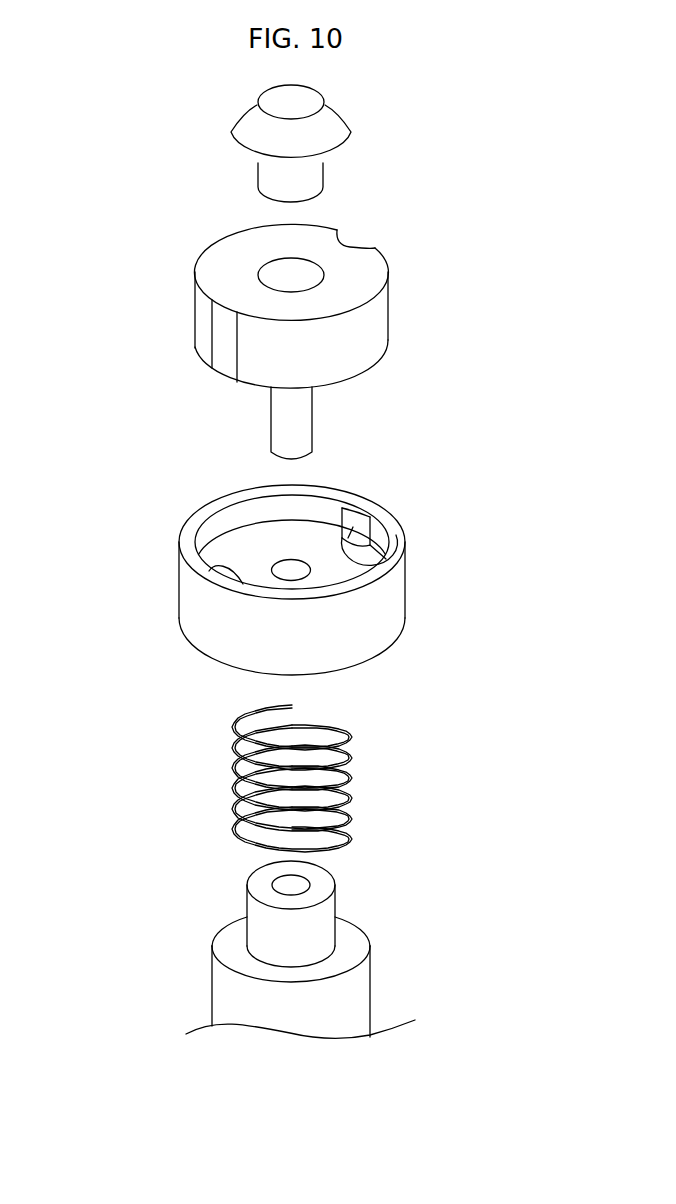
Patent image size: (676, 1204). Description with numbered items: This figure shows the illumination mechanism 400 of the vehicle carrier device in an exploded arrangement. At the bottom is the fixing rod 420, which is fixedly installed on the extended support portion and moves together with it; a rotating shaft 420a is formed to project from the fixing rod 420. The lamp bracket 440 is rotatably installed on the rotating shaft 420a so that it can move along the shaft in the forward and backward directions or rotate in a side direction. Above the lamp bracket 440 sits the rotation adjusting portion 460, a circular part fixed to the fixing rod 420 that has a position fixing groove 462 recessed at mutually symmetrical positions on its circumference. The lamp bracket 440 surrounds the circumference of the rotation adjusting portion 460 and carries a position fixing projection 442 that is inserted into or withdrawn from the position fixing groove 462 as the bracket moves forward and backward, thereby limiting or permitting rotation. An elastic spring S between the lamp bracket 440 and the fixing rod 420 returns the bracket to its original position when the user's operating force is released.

The illumination mechanism 400 is at (540, 155).
The rotation adjusting portion 460 is at (212, 270).
The position fixing groove 462 is at (223, 325).
The lamp bracket 440 is at (187, 595).
The position fixing projection 442 is at (390, 561).
The elastic spring S is at (230, 750).
The fixing rod 420 is at (357, 988).
The rotating shaft 420a is at (258, 918).